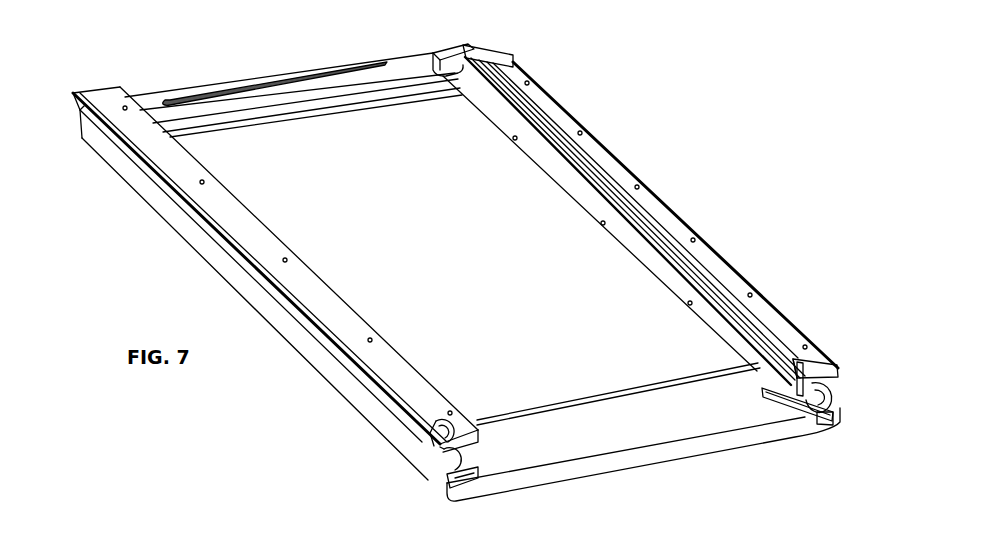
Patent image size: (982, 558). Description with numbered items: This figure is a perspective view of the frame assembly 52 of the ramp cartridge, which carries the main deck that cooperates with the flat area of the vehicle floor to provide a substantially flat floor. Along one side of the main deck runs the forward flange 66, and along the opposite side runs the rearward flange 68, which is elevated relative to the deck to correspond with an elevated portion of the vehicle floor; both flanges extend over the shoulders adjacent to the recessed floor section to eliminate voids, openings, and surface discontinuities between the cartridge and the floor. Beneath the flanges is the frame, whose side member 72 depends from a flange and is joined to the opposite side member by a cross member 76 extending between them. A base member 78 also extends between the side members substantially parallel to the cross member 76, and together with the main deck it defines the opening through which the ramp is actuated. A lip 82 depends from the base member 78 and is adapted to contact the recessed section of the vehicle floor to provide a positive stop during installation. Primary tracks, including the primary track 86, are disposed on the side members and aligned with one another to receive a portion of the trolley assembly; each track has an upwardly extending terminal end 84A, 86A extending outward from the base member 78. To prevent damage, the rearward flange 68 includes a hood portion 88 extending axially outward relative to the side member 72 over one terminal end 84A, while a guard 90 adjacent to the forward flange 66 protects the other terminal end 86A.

The frame assembly 52 is at (148, 91).
The forward flange 66 is at (604, 154).
The rearward flange 68 is at (118, 99).
The side member 72 is at (103, 143).
The cross member 76 is at (270, 83).
The base member 78 is at (493, 452).
The lip 82 is at (565, 470).
The upwardly extending terminal end 84A is at (443, 477).
The primary track 86 is at (463, 70).
The upwardly extending terminal end 86A is at (828, 398).
The hood portion 88 is at (423, 418).
The guard 90 is at (797, 328).